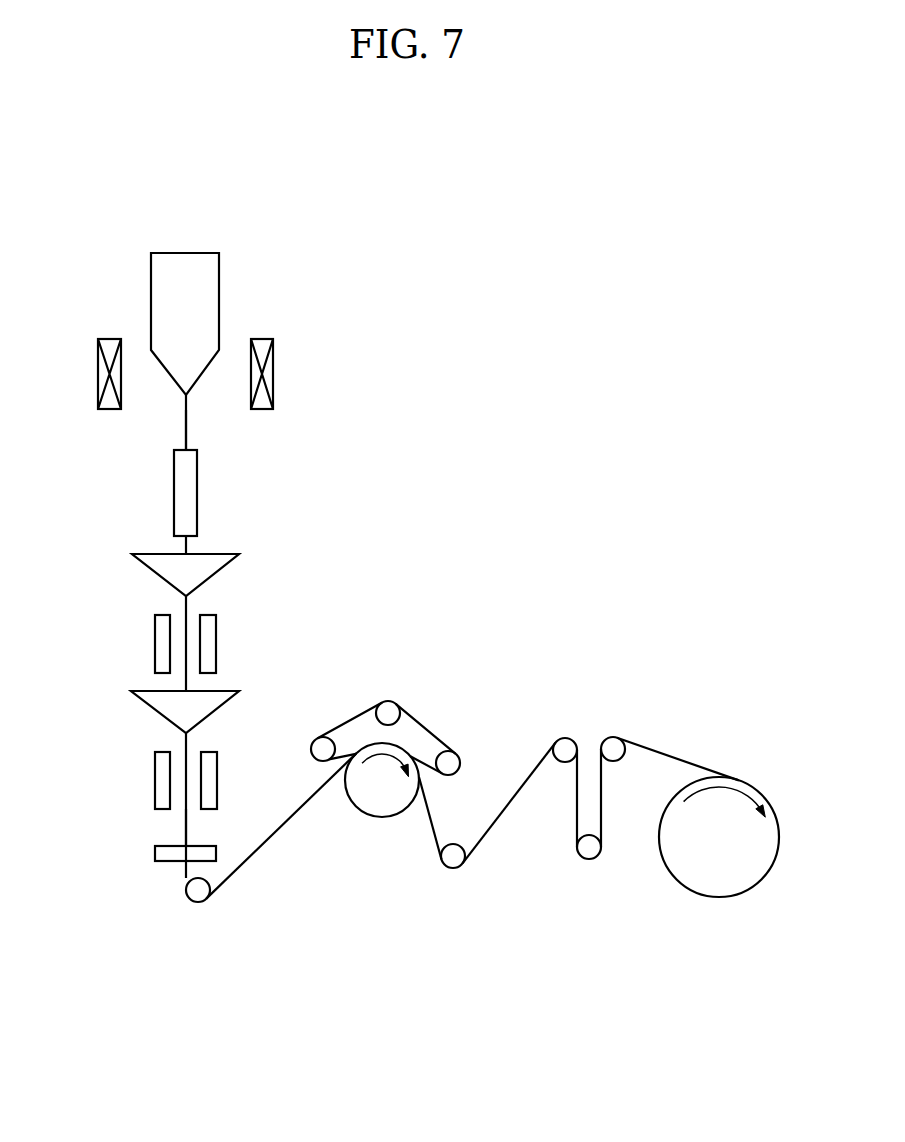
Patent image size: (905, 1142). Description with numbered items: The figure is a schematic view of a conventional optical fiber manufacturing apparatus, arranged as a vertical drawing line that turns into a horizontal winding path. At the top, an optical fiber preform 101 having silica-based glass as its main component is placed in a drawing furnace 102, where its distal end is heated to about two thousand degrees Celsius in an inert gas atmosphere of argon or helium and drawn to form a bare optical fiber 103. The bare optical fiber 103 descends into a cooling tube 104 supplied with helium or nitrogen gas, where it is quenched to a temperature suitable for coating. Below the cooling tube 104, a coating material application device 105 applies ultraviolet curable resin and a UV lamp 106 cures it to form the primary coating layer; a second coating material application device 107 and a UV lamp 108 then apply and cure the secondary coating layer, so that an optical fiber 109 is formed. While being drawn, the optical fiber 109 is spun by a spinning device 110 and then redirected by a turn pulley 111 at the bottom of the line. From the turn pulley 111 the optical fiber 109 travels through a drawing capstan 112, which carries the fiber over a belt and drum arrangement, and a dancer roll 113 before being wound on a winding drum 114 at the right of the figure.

The optical fiber preform 101 is at (208, 290).
The drawing furnace 102 is at (268, 375).
The bare optical fiber 103 is at (187, 429).
The cooling tube 104 is at (191, 494).
The coating material application device 105 is at (206, 568).
The UV lamp 106 is at (208, 642).
The coating material application device 107 is at (170, 705).
The UV lamp 108 is at (162, 779).
The optical fiber 109 is at (183, 825).
The spinning device 110 is at (202, 848).
The turn pulley 111 is at (198, 892).
The drawing capstan 112 is at (395, 698).
The dancer roll 113 is at (588, 850).
The winding drum 114 is at (720, 875).